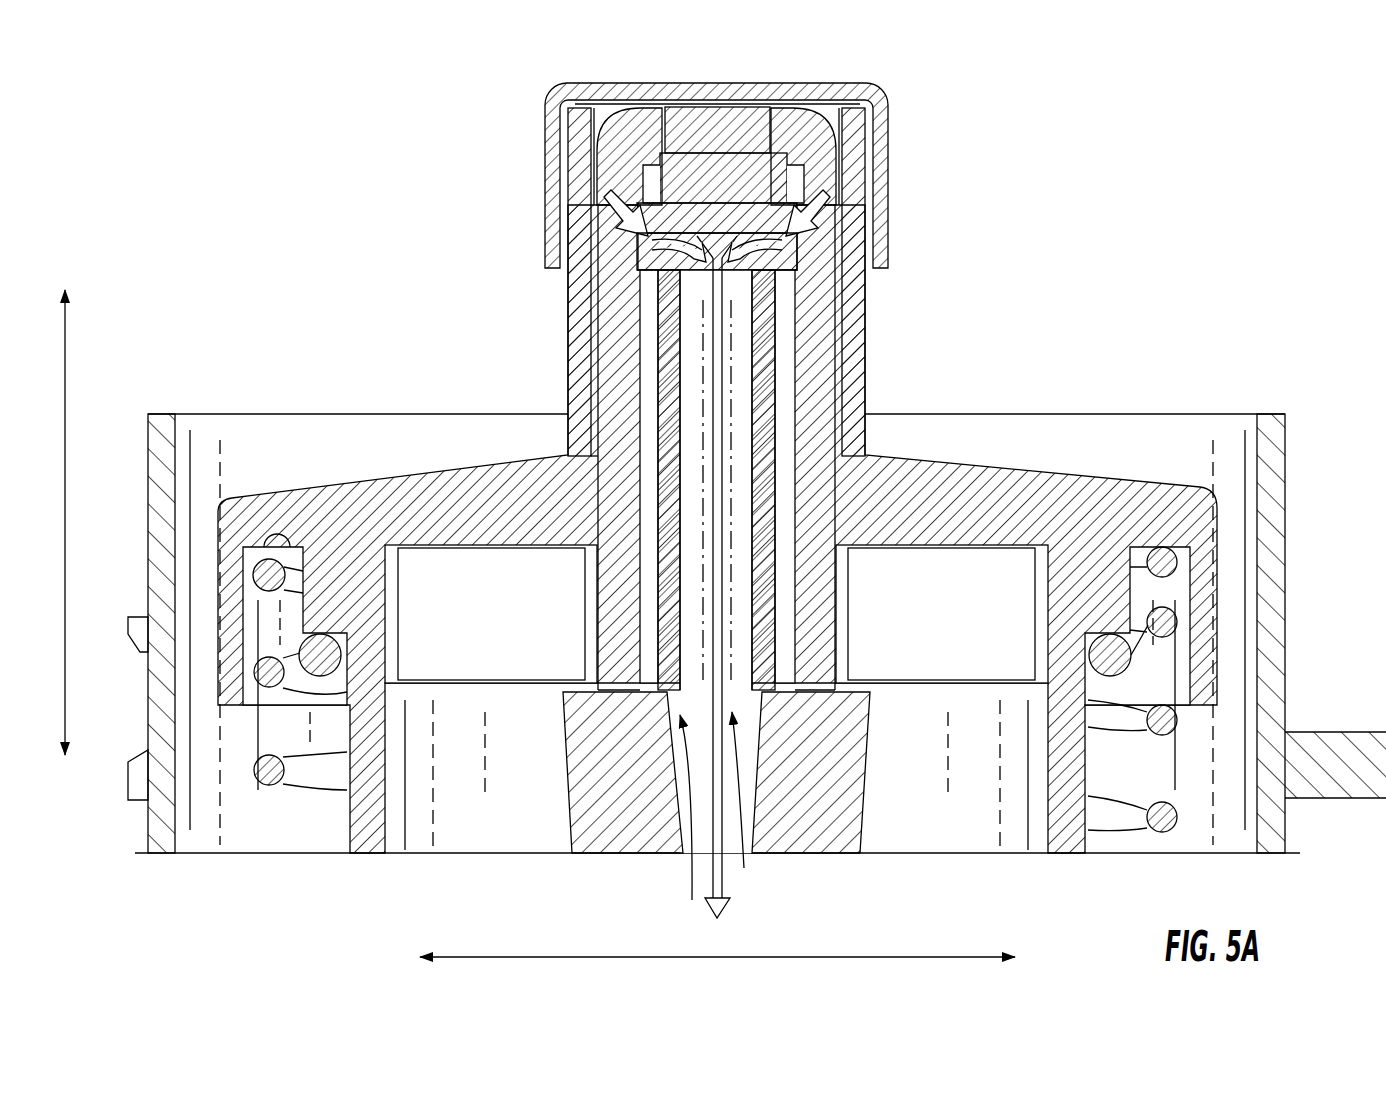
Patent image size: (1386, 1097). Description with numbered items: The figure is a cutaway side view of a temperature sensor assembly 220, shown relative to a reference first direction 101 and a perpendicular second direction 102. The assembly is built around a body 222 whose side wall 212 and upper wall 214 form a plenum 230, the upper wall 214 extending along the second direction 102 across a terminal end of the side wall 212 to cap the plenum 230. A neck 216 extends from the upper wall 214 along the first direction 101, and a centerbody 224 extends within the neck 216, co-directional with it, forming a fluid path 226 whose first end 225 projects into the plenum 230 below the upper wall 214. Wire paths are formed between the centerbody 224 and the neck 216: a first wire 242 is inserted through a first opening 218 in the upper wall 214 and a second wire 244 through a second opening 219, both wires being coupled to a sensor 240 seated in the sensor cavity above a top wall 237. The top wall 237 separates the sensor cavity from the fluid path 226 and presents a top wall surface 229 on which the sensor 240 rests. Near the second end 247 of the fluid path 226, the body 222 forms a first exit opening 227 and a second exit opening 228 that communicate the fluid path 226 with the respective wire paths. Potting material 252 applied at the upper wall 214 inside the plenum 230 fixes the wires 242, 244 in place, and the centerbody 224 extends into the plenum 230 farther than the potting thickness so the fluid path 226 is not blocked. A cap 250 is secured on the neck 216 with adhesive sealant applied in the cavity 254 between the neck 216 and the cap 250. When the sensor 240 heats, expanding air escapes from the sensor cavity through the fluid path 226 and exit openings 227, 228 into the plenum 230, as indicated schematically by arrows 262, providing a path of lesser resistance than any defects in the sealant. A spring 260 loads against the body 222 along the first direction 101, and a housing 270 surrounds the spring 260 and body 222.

The first direction 101 is at (66, 378).
The second direction 102 is at (985, 957).
The side wall 212 is at (388, 737).
The upper wall 214 is at (498, 552).
The neck 216 is at (852, 352).
The first opening 218 is at (597, 552).
The second opening 219 is at (845, 552).
The sensor assembly 220 is at (800, 185).
The body 222 is at (1050, 500).
The centerbody 224 is at (665, 422).
The first end 225 is at (692, 880).
The fluid path 226 is at (744, 868).
The first exit opening 227 is at (632, 252).
The second exit opening 228 is at (797, 250).
The top wall surface 229 is at (713, 200).
The plenum 230 is at (494, 736).
The top wall 237 is at (805, 204).
The sensor 240 is at (735, 107).
The first wire 242 is at (597, 762).
The second wire 244 is at (845, 793).
The second end 247 is at (740, 265).
The cap 250 is at (880, 248).
The potting material 252 is at (522, 642).
The cavity 254 is at (562, 197).
The spring 260 is at (1162, 732).
The arrows 262 is at (715, 342).
The housing 270 is at (1268, 570).